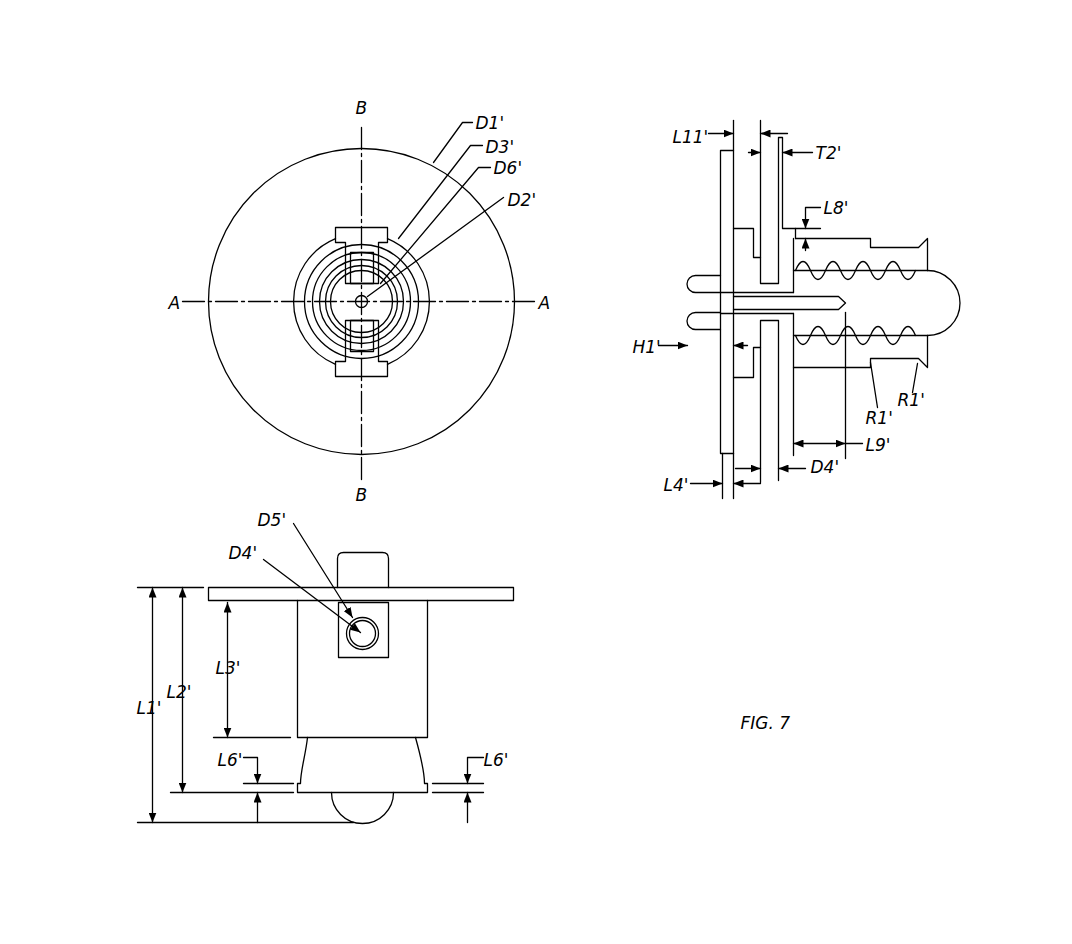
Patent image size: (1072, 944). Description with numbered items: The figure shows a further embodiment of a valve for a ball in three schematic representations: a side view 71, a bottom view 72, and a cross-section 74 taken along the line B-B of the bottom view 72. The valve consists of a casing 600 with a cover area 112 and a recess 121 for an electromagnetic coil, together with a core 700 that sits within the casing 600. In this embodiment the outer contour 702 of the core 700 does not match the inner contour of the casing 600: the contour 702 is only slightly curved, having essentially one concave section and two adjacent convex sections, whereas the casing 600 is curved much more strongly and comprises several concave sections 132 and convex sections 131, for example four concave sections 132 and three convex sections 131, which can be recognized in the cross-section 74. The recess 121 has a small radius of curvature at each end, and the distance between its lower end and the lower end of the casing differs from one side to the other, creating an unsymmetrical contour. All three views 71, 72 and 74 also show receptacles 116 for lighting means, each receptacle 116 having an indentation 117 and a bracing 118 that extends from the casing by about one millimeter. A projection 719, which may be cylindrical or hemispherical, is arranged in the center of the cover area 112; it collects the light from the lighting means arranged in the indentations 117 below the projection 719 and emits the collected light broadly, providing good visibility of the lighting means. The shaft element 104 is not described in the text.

The side view 71 is at (210, 542).
The bottom view 72 is at (227, 172).
The cross-section 74 is at (942, 155).
The fastener shaft 104 is at (945, 343).
The cover area 112 is at (285, 410).
The receptacle 116 is at (338, 172).
The indentation 117 is at (352, 235).
The bracing 118 is at (383, 228).
The recess 121 is at (420, 762).
The convex section 131 is at (820, 262).
The concave section 132 is at (867, 255).
The casing 600 is at (468, 435).
The core 700 is at (298, 263).
The contour 702 is at (953, 275).
The projection 719 is at (342, 310).